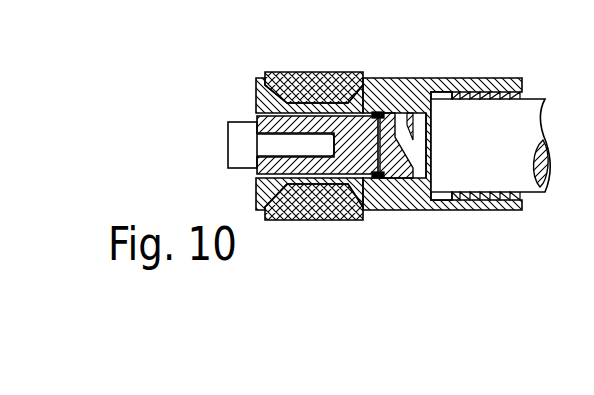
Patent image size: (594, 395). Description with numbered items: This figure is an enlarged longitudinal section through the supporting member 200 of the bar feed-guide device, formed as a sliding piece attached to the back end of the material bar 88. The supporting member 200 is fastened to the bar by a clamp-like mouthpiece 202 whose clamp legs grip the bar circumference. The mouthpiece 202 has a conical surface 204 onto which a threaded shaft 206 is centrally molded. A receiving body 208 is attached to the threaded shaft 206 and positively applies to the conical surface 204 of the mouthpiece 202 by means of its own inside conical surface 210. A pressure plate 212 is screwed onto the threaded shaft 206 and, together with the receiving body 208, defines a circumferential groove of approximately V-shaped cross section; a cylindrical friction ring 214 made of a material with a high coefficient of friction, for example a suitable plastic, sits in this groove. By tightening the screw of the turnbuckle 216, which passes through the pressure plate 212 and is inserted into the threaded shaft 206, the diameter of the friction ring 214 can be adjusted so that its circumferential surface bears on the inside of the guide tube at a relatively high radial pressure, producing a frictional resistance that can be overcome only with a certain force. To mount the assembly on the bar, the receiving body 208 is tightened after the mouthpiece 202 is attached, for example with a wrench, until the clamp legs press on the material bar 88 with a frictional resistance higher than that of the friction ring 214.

The material bar 88 is at (534, 117).
The supporting member 200 is at (406, 66).
The mouthpiece 202 is at (503, 203).
The conical surface 204 is at (402, 196).
The threaded shaft 206 is at (347, 160).
The receiving body 208 is at (373, 78).
The inside conical surface 210 is at (412, 96).
The pressure plate 212 is at (262, 102).
The friction ring 214 is at (300, 77).
The turnbuckle 216 is at (237, 145).